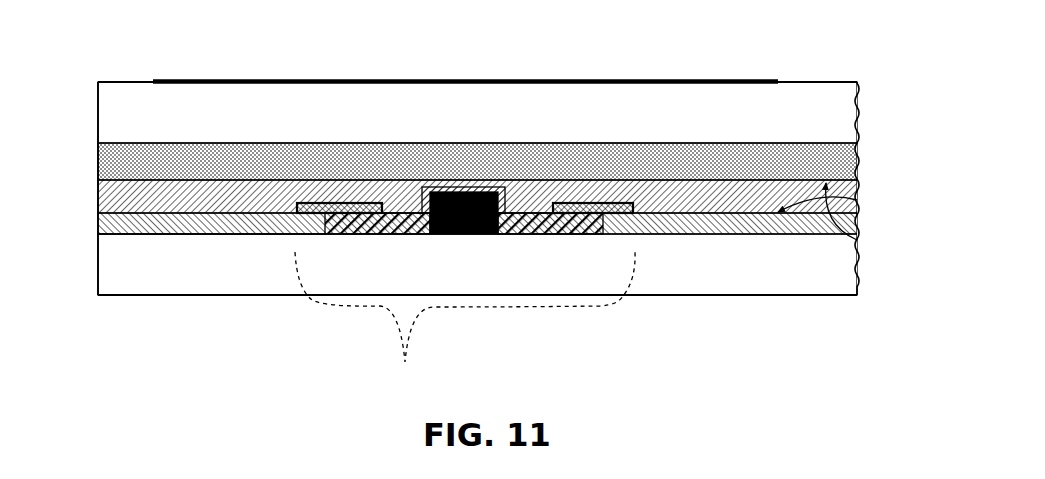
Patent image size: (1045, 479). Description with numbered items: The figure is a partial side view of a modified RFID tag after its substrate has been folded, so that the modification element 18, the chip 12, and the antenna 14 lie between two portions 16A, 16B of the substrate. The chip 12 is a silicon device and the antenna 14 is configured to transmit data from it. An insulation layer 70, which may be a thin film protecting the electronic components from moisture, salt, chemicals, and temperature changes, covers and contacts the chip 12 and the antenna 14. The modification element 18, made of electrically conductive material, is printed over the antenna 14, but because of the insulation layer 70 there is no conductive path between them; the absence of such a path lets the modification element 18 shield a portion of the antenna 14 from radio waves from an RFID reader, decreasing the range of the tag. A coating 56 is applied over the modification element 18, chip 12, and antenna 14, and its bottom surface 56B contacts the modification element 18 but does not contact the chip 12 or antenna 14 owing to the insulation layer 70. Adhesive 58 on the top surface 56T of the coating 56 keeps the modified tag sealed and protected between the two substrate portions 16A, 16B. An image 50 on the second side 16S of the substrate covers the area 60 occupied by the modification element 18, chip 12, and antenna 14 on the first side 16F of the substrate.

The chip 12 is at (463, 237).
The antenna 14 is at (390, 237).
The portion of substrate 16A is at (195, 122).
The portion of substrate 16B is at (192, 278).
The second side of substrate 16S is at (125, 86).
The first side of substrate 16F is at (122, 237).
The modification element 18 is at (329, 202).
The image 50 is at (232, 78).
The coating 56 is at (858, 196).
The bottom surface of coating 56B is at (858, 165).
The top surface of coating 56T is at (858, 248).
The adhesive 58 is at (858, 153).
The area 60 is at (465, 324).
The insulation layer 70 is at (117, 224).